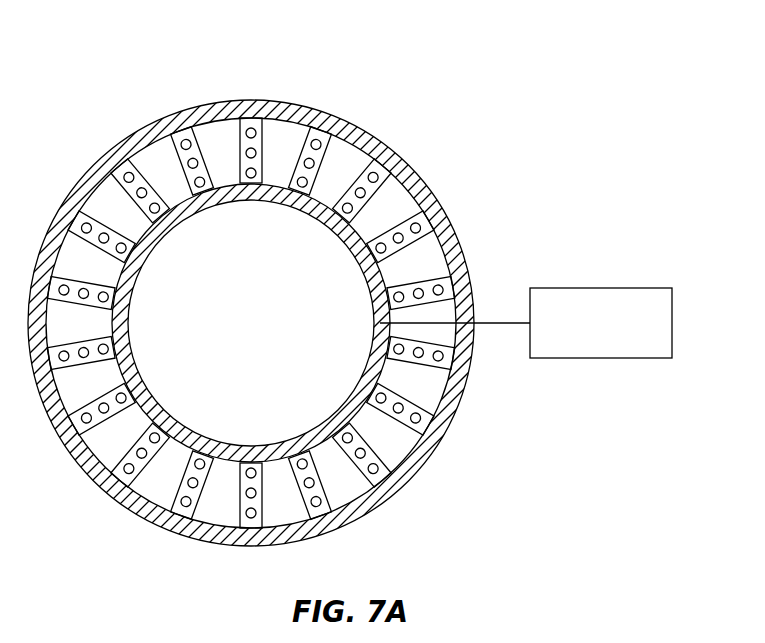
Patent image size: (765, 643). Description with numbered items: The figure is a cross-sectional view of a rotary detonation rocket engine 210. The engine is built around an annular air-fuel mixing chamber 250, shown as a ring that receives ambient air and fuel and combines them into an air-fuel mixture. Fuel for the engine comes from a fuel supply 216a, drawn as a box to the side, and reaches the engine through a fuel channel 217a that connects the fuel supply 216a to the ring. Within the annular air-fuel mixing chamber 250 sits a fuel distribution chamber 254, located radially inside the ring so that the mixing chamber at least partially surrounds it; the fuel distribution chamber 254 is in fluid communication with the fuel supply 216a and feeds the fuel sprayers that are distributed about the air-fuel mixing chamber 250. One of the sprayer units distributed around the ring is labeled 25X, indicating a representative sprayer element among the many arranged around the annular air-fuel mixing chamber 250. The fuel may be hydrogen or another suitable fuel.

The rotary detonation rocket engine 210 is at (382, 296).
The air-fuel mixing chamber 250 is at (312, 76).
The fuel injector block 25X is at (386, 199).
The fuel distribution chamber 254 is at (272, 330).
The fuel channel 217a is at (507, 325).
The fuel supply 216a is at (604, 358).